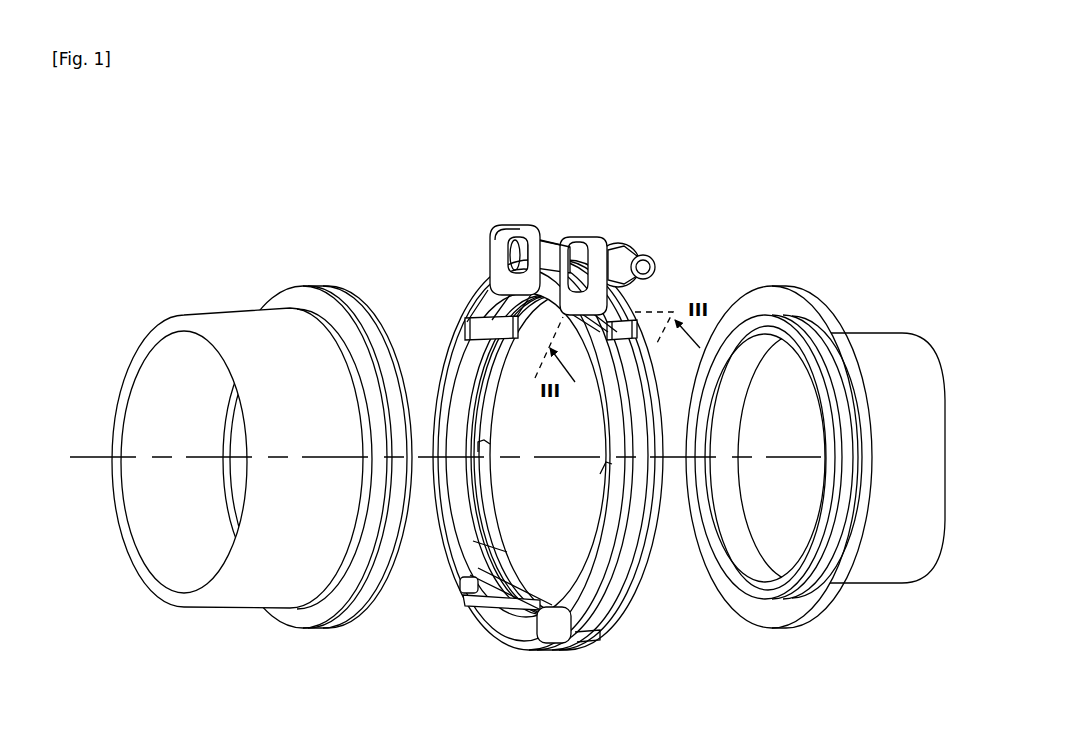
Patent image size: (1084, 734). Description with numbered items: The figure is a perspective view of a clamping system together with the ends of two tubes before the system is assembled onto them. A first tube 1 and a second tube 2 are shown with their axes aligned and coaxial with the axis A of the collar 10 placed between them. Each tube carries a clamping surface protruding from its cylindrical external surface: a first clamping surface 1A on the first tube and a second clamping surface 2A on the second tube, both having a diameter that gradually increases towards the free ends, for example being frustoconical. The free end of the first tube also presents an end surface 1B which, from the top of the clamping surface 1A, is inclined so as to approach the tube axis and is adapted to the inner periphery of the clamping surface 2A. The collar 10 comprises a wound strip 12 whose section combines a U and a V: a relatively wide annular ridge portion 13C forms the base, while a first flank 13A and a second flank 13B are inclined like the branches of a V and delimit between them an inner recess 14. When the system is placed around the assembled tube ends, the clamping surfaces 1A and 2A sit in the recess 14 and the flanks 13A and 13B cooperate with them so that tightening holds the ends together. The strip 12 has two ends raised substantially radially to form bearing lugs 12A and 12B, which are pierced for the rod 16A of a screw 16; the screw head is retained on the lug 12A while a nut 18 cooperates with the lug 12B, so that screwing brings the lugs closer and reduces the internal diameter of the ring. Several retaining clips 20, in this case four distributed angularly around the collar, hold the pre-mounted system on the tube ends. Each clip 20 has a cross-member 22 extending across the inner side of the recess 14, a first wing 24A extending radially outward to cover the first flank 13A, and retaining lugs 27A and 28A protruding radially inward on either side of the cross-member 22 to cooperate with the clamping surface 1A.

The first tube 1 is at (262, 420).
The first clamping surface 1A is at (287, 300).
The end surface 1B is at (386, 312).
The second tube 2 is at (815, 432).
The second clamping surface 2A is at (823, 591).
The collar 10 is at (596, 403).
The strip 12 is at (573, 469).
The bearing lug 12A is at (507, 227).
The bearing lug 12B is at (603, 238).
The first flank 13A is at (527, 639).
The second flank 13B is at (657, 403).
The annular ridge portion 13C is at (606, 611).
The inner recess 14 is at (468, 518).
The screw 16 is at (547, 249).
The rod 16A is at (592, 208).
The nut 18 is at (625, 243).
The retaining clip 20 is at (452, 305).
The cross-member 22 is at (510, 600).
The first wing 24A is at (472, 608).
The retaining lug 27A is at (490, 591).
The retaining lug 28A is at (457, 577).
The axis A is at (91, 456).